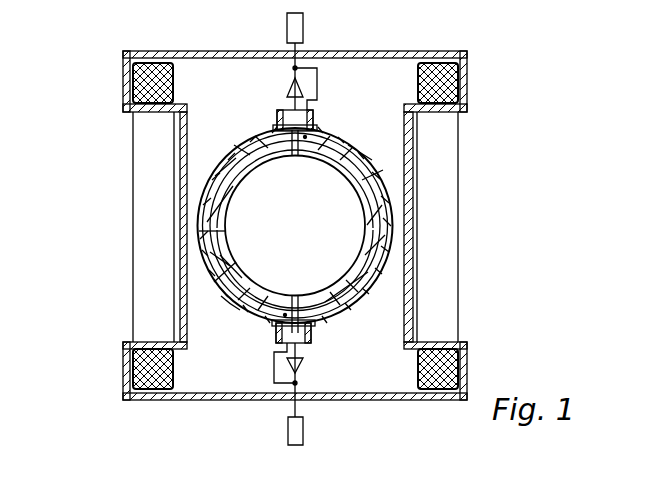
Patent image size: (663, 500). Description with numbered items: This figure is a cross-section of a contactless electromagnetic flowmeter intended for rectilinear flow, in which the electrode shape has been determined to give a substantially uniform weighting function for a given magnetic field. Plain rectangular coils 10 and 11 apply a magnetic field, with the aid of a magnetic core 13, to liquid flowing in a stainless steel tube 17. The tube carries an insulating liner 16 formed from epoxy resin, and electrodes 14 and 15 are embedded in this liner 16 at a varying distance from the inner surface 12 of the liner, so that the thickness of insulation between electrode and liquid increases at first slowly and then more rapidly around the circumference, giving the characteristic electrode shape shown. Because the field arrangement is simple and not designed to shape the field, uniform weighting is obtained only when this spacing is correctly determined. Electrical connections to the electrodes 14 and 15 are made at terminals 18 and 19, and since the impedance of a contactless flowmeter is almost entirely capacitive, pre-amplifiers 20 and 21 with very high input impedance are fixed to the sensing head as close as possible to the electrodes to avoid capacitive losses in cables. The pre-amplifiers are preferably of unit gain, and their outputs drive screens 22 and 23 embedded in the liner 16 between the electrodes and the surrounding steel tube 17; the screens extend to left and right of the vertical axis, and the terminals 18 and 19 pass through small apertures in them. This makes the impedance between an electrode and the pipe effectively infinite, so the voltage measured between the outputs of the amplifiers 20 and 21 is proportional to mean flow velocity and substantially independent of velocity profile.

The coil 10 is at (445, 85).
The coil 11 is at (130, 83).
The inner surface of the liner 12 is at (362, 218).
The magnetic core 13 is at (470, 72).
The electrode 14 is at (243, 157).
The electrode 15 is at (220, 287).
The insulating liner 16 is at (217, 231).
The stainless steel tube 17 is at (222, 297).
The terminal 18 is at (277, 128).
The terminal 19 is at (312, 338).
The pre-amplifier 20 is at (287, 83).
The pre-amplifier 21 is at (302, 368).
The screen 22 is at (345, 147).
The screen 23 is at (380, 290).